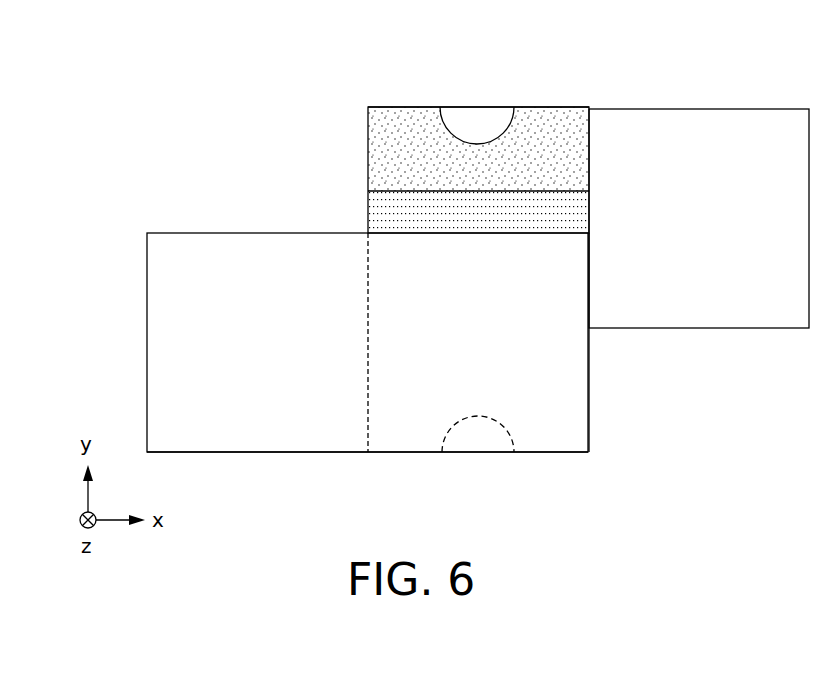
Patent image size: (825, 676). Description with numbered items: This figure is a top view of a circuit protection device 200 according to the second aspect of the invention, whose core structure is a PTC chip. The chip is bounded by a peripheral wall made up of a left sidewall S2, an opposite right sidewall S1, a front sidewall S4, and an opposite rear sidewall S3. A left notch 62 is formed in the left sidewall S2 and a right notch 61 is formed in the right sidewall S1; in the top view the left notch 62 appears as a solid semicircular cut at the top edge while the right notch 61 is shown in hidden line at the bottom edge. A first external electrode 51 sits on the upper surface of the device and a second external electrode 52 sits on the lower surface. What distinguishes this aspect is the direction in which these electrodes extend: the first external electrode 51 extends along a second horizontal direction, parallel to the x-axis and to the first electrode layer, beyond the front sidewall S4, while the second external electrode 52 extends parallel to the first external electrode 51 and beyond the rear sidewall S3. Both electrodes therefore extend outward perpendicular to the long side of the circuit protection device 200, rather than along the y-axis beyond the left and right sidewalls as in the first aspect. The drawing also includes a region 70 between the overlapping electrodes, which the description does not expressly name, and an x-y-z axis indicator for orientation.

The circuit protection device 200 is at (122, 55).
The first external electrode 51 is at (259, 440).
The second external electrode 52 is at (698, 120).
The right notch 61 is at (478, 462).
The left notch 62 is at (478, 110).
The bonding layer 70 is at (378, 147).
The right sidewall S1 is at (548, 475).
The left sidewall S2 is at (544, 90).
The rear sidewall S3 is at (608, 283).
The front sidewall S4 is at (346, 281).